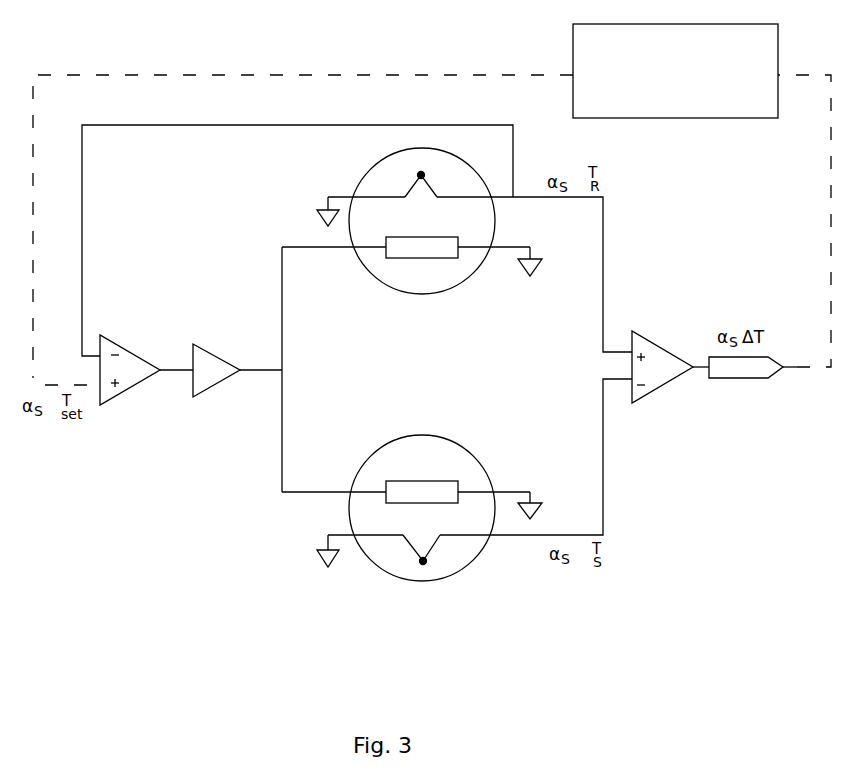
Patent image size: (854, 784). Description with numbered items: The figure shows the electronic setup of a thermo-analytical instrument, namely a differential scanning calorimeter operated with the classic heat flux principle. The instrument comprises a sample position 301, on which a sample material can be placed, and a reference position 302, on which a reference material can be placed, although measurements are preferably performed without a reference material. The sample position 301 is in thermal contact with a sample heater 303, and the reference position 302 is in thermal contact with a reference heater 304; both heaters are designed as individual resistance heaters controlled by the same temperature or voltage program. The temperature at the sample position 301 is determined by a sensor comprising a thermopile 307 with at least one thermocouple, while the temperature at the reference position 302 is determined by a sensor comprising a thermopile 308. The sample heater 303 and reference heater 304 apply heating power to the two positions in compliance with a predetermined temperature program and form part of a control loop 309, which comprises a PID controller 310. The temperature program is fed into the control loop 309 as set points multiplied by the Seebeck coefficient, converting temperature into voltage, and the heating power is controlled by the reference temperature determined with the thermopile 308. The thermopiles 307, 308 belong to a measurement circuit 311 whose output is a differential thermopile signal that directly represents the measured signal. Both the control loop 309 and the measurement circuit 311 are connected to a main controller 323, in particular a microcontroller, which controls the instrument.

The sample position 301 is at (485, 548).
The reference position 302 is at (370, 167).
The sample heater 303 is at (419, 502).
The reference heater 304 is at (419, 247).
The thermopile 307 is at (423, 561).
The thermopile 308 is at (419, 172).
The control loop 309 is at (205, 120).
The PID controller 310 is at (211, 375).
The measurement circuit 311 is at (603, 240).
The main controller 323 is at (675, 71).